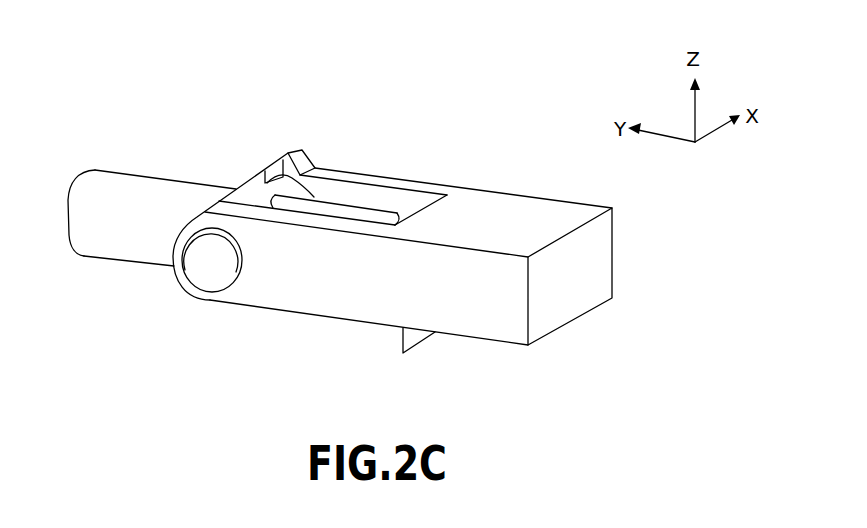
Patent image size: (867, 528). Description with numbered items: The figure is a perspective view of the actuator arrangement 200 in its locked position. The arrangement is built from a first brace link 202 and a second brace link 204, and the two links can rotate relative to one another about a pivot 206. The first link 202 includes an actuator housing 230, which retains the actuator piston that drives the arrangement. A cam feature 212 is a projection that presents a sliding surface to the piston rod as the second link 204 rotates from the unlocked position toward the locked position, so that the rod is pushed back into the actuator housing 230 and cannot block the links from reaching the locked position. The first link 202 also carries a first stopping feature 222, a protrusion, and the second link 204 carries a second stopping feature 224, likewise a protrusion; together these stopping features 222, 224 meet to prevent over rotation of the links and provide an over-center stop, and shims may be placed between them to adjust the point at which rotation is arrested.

The actuator arrangement 200 is at (468, 94).
The first brace link 202 is at (118, 182).
The second brace link 204 is at (522, 210).
The pivot 206 is at (203, 272).
The cam feature 212 is at (403, 340).
The first stopping feature 222 is at (273, 170).
The second stopping feature 224 is at (305, 152).
The actuator housing 230 is at (372, 214).